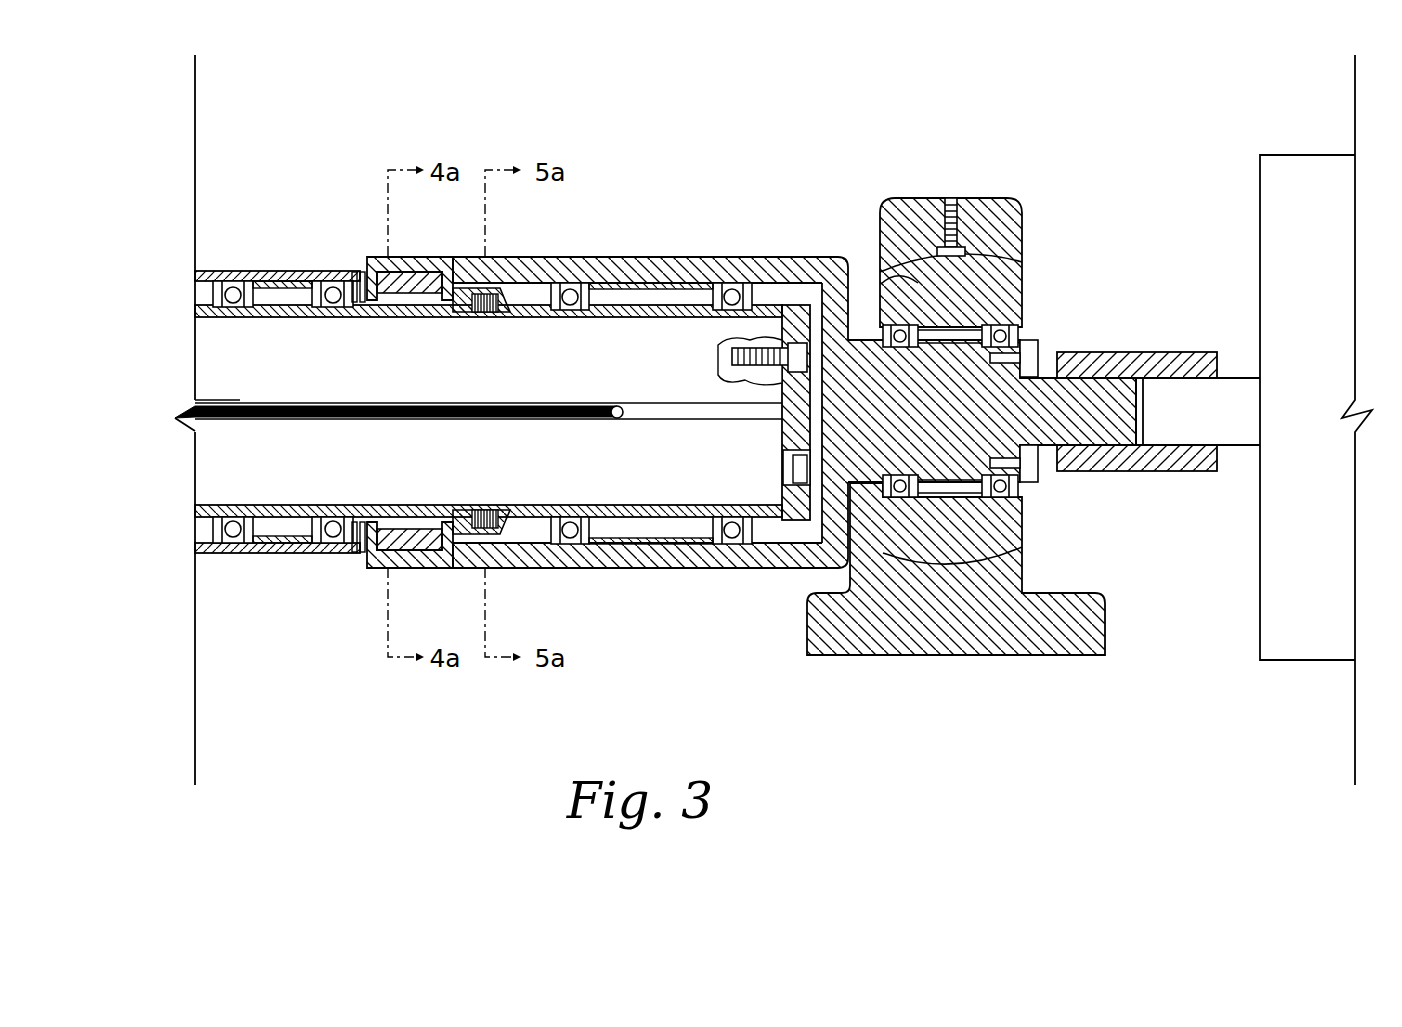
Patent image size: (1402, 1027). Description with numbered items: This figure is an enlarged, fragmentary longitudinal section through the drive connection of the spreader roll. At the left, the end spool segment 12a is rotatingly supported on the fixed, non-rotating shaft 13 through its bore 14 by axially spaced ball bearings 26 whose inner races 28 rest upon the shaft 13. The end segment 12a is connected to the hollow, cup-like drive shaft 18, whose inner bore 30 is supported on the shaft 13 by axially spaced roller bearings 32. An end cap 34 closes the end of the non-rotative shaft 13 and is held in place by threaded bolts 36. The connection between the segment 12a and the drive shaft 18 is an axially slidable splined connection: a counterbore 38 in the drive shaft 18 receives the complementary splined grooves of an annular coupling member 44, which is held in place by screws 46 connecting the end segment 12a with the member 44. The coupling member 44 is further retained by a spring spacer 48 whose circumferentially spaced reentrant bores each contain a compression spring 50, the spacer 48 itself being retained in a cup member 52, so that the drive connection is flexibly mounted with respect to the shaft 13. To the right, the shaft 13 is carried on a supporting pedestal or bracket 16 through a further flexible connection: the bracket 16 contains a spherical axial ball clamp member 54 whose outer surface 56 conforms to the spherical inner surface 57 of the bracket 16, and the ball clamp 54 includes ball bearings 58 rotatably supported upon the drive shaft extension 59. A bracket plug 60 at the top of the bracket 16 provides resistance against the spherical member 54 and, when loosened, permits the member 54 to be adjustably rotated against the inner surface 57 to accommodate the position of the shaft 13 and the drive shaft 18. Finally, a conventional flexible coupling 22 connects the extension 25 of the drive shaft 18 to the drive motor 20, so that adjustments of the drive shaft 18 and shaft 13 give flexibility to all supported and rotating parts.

The end segment 12a is at (232, 270).
The fixed axle or shaft 13 is at (225, 478).
The bore 14 is at (336, 297).
The supporting pedestal or bracket 16 is at (1005, 210).
The hollow cylindrical drive shaft 18 is at (650, 277).
The drive motor 20 is at (1268, 235).
The flexible coupling 22 is at (1155, 352).
The extension 25 is at (1098, 422).
The ball bearings 26 is at (305, 276).
The inner races 28 is at (343, 320).
The inner bore 30 is at (672, 290).
The roller bearings 32 is at (566, 315).
The end cap 34 is at (812, 320).
The threaded bolts 36 is at (792, 458).
The counterbore 38 is at (415, 565).
The annular coupling member 44 is at (368, 565).
The screws 46 is at (370, 265).
The spring spacer 48 is at (505, 508).
The compression spring 50 is at (480, 320).
The cup member 52 is at (510, 558).
The spherical axial ball clamp member 54 is at (988, 310).
The outer surface 56 is at (990, 252).
The inner surface 57 is at (887, 275).
The ball bearings 58 is at (987, 360).
The drive shaft extension 59 is at (1052, 452).
The bracket plug 60 is at (970, 280).